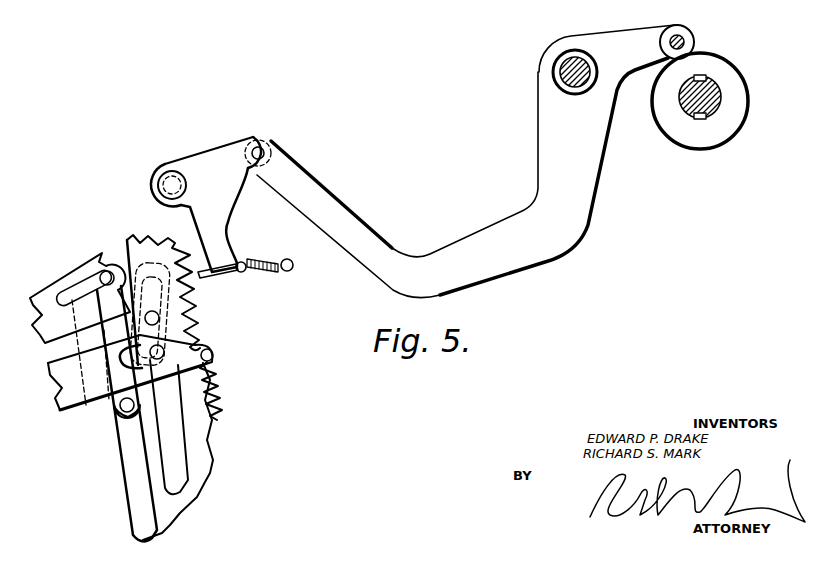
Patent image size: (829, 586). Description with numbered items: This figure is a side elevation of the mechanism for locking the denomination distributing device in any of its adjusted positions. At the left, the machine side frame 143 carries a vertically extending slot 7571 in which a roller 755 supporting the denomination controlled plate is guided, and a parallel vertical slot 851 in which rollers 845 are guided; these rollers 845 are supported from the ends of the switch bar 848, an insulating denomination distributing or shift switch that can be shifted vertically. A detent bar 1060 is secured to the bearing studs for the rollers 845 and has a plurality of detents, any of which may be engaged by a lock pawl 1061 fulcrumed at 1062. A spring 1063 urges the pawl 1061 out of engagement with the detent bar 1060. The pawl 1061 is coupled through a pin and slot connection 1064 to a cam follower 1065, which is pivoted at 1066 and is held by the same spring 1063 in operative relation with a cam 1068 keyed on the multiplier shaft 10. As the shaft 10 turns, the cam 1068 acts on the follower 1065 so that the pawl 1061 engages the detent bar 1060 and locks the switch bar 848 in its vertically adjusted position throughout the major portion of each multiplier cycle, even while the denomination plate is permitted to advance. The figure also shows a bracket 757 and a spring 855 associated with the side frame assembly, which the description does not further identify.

The multiplier shaft 10 is at (683, 107).
The machine side frame 143 is at (205, 482).
The roller 755 is at (107, 255).
The bracket plate 757 is at (50, 287).
The vertically extending slot 7571 is at (133, 508).
The roller 845 is at (163, 323).
The switch bar 848 is at (155, 298).
The vertical slot 851 is at (197, 503).
The spring 855 is at (215, 390).
The detent bar 1060 is at (150, 238).
The lock pawl 1061 is at (225, 246).
The fulcrum 1062 is at (178, 178).
The spring 1063 is at (250, 271).
The pin and slot connection 1064 is at (279, 151).
The cam follower 1065 is at (378, 237).
The pivot 1066 is at (563, 62).
The cam 1068 is at (733, 88).